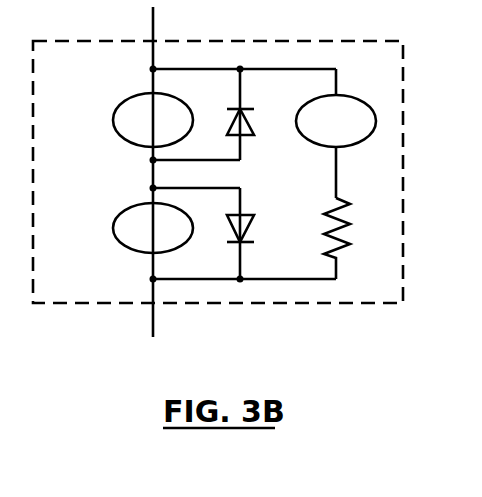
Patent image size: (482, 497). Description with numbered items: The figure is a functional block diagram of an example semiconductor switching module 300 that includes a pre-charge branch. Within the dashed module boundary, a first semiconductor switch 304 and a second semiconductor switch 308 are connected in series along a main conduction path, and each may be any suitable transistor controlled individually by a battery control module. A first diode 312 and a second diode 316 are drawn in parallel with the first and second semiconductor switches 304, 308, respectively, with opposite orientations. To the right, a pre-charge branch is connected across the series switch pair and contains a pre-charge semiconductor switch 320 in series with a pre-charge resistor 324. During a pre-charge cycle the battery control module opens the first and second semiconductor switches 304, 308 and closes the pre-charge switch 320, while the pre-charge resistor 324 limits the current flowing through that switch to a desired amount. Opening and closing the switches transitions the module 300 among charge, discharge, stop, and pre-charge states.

The semiconductor switching module 300 is at (404, 57).
The first semiconductor switch 304 is at (113, 120).
The second semiconductor switch 308 is at (113, 228).
The first diode 312 is at (247, 137).
The second diode 316 is at (254, 222).
The third switch 320 is at (345, 143).
The pre-charge resistor 324 is at (340, 252).